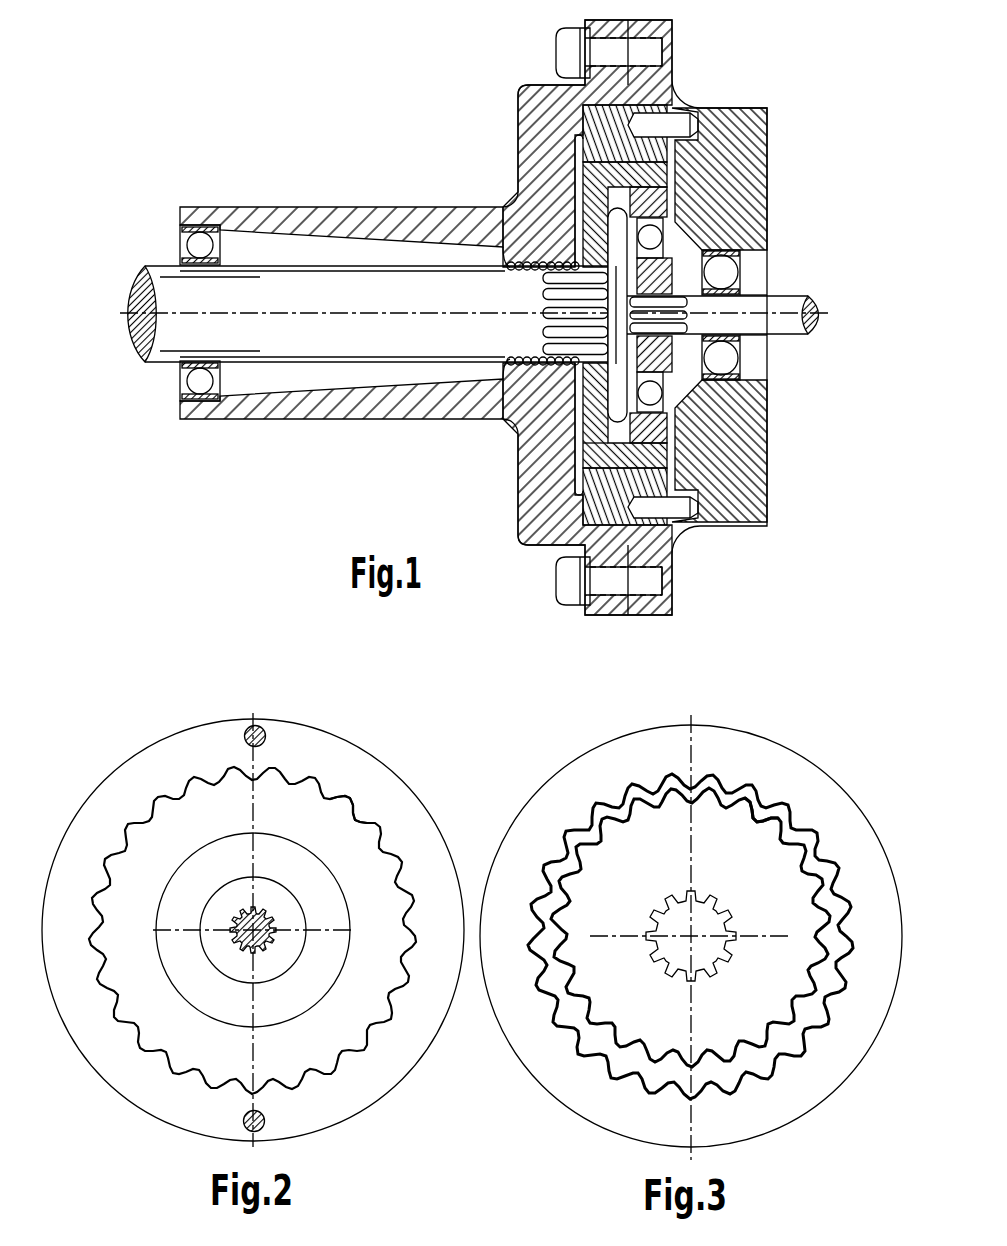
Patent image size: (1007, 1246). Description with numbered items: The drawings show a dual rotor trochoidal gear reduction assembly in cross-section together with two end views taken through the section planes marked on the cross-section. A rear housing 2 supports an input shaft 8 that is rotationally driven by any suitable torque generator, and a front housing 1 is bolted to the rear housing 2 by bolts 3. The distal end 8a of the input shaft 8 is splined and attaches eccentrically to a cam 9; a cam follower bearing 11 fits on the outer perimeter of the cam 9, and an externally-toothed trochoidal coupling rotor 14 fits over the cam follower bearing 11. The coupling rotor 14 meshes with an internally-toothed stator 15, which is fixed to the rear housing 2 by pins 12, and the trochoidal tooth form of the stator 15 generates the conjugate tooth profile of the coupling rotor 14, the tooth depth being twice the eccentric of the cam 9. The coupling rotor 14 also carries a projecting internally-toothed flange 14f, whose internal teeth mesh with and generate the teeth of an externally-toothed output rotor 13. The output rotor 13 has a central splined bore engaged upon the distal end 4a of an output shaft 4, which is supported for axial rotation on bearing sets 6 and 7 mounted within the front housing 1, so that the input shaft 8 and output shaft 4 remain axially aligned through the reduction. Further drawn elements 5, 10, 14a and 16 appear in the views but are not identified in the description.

In FIG. 1, the front housing 1 is at (410, 222).
In FIG. 1, the rear housing 2 is at (582, 98).
In FIG. 1, the bolts 3 is at (572, 50).
In FIG. 1, the output shaft 4 is at (162, 290).
In FIG. 1, the distal end of output shaft 4a is at (540, 322).
In FIG. 3, the distal end of output shaft 4a is at (700, 950).
In FIG. 1, the hub 5 is at (668, 262).
In FIG. 1, the bearing set 6 is at (205, 238).
In FIG. 1, the bearing set 7 is at (545, 365).
In FIG. 1, the input shaft 8 is at (787, 303).
In FIG. 1, the distal end of input shaft 8a is at (675, 330).
In FIG. 2, the distal end of input shaft 8a is at (268, 912).
In FIG. 1, the cam 9 is at (640, 276).
In FIG. 2, the cam 9 is at (222, 945).
In FIG. 1, the ball bearing 10 is at (655, 388).
In FIG. 1, the cam follower bearing 11 is at (765, 445).
In FIG. 2, the cam follower bearing 11 is at (215, 988).
In FIG. 1, the pins 12 is at (676, 124).
In FIG. 1, the output rotor 13 is at (602, 228).
In FIG. 3, the output rotor 13 is at (750, 893).
In FIG. 1, the coupling rotor 14 is at (600, 170).
In FIG. 2, the coupling rotor 14 is at (160, 843).
In FIG. 2, the inner wavy contour of ring 14a is at (352, 800).
In FIG. 1, the flange of coupling rotor 14f is at (603, 462).
In FIG. 3, the flange of coupling rotor 14f is at (758, 813).
In FIG. 1, the stator 15 is at (613, 133).
In FIG. 2, the stator 15 is at (167, 762).
In FIG. 3, the internal wave gear ring 16 is at (740, 777).